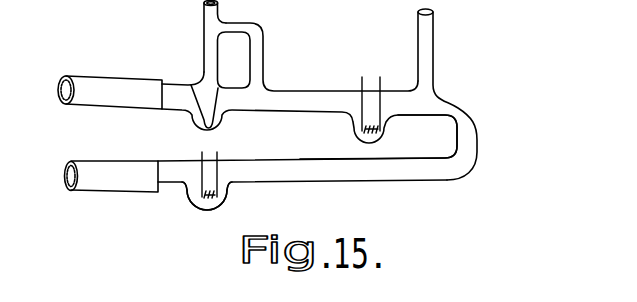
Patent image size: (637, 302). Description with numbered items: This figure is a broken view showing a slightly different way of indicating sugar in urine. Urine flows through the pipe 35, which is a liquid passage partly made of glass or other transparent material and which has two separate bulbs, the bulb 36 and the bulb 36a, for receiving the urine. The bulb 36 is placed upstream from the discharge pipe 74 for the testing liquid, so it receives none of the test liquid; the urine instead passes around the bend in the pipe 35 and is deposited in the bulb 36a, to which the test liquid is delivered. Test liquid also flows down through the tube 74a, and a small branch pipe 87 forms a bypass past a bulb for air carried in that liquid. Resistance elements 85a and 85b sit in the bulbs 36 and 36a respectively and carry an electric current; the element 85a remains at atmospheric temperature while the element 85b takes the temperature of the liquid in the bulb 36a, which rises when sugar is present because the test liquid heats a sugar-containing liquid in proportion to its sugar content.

The pipe 35 is at (137, 186).
The bulb 36 is at (384, 137).
The bulb 36a is at (218, 208).
The discharge pipe 74 is at (425, 51).
The tube 74a is at (203, 26).
The resistance element 85a is at (354, 133).
The resistance element 85b is at (216, 183).
The branch pipe 87 is at (263, 62).